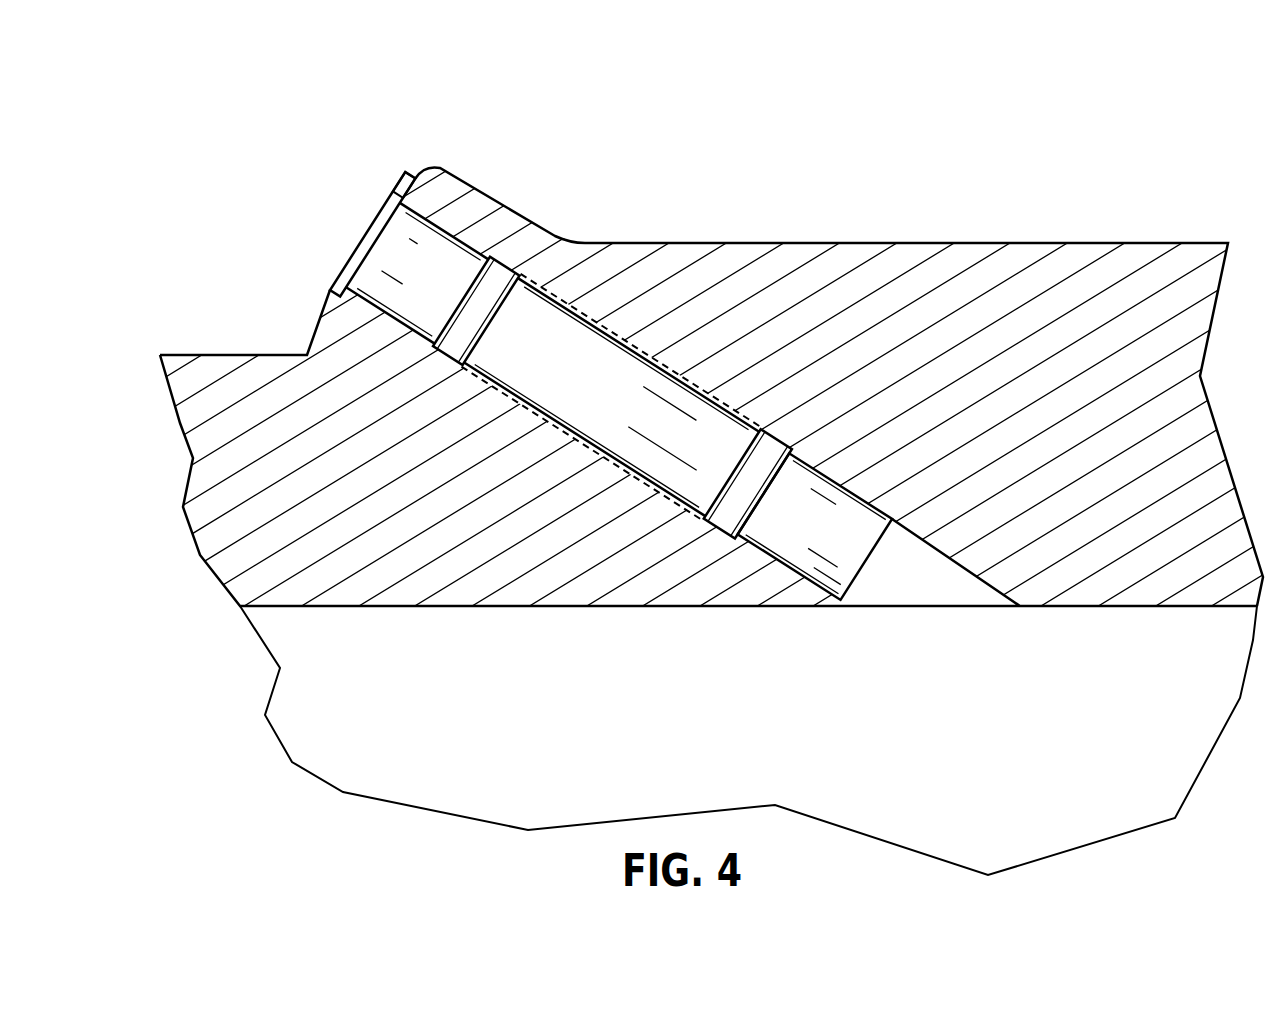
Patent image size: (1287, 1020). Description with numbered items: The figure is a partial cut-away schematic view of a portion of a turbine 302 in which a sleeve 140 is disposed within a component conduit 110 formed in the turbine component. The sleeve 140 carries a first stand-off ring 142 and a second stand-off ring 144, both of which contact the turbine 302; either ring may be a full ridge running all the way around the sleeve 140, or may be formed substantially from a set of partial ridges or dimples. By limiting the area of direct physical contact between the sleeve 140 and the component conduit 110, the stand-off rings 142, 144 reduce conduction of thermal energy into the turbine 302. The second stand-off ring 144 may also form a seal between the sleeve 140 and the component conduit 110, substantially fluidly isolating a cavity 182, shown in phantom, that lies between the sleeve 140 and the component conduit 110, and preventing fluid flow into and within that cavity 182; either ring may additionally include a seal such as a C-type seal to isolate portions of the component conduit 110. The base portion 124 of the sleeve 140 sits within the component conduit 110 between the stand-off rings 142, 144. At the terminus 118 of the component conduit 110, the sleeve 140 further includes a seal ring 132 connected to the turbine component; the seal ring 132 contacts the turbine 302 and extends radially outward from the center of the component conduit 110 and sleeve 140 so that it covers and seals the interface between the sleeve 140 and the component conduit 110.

The turbine 302 is at (232, 126).
The component conduit 110 is at (850, 465).
The terminus 118 is at (393, 191).
The seal ring 132 is at (398, 186).
The sleeve 140 is at (432, 255).
The first stand-off ring 142 is at (488, 285).
The second stand-off ring 144 is at (750, 493).
The base portion 124 is at (623, 400).
The cavity 182 is at (613, 343).